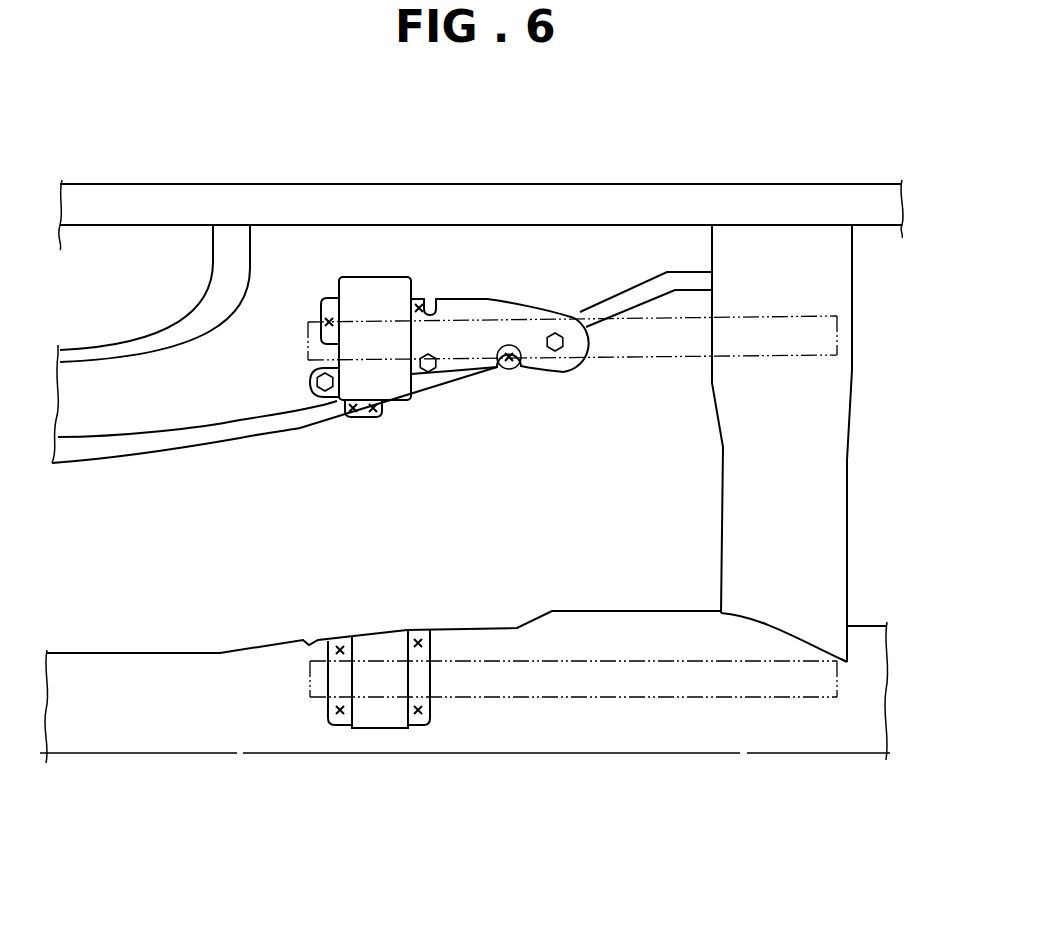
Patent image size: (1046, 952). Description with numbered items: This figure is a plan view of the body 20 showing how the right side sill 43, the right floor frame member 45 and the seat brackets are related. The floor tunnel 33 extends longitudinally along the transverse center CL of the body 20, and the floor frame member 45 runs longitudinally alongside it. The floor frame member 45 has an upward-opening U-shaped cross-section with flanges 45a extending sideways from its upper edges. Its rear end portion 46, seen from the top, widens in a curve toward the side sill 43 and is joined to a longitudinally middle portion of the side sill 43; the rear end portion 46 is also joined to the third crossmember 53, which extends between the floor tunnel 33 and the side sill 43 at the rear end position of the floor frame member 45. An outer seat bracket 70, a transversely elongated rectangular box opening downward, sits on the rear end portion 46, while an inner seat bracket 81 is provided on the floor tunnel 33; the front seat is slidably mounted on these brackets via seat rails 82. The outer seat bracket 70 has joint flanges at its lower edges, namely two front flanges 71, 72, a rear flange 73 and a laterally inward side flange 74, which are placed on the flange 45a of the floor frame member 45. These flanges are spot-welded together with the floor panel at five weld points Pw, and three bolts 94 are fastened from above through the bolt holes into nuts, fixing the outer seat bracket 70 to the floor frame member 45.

The body 20 is at (247, 171).
The side sill 43 is at (110, 194).
The rear end portion of floor frame member 46 is at (642, 235).
The floor frame member 45 is at (100, 413).
The flange 45a is at (174, 337).
The outer seat bracket 70 is at (376, 277).
The front flange 71 is at (310, 380).
The front flange 72 is at (308, 330).
The rear flange 73 is at (490, 298).
The laterally inward side flange 74 is at (378, 415).
The bolt 94 is at (318, 398).
The weld point Pw is at (329, 318).
The seat rail 82 is at (772, 313).
The third crossmember 53 is at (810, 450).
The floor tunnel 33 is at (140, 673).
The inner seat bracket 81 is at (383, 722).
The transverse center CL is at (108, 760).